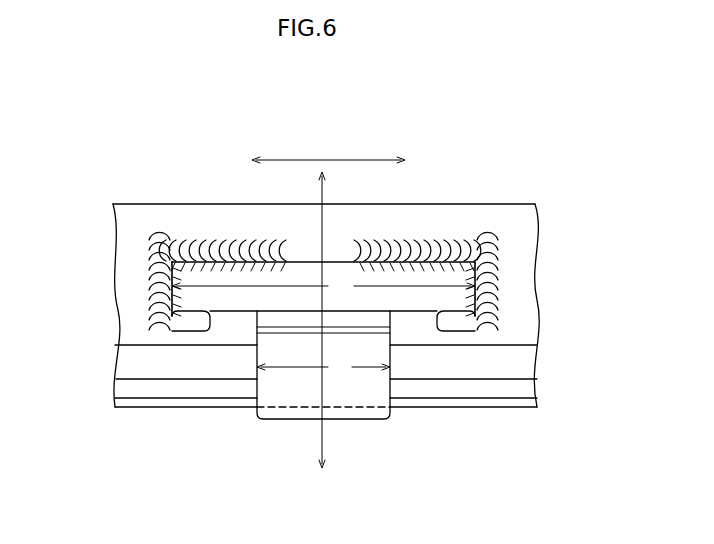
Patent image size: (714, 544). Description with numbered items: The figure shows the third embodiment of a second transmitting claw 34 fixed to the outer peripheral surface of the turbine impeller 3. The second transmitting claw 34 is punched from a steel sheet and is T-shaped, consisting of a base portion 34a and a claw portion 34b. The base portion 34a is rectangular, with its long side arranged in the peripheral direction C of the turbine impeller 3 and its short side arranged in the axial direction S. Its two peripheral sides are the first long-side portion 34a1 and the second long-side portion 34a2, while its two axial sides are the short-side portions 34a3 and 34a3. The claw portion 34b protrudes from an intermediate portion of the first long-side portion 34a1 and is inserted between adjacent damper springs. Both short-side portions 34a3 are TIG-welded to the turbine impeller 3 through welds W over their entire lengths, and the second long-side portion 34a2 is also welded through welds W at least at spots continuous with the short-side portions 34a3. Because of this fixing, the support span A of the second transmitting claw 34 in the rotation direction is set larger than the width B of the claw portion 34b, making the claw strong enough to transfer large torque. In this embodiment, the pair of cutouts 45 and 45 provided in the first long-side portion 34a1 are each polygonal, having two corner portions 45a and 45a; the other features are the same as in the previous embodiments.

The turbine impeller 3 is at (522, 232).
The second transmitting claw 34 is at (326, 420).
The base portion 34a is at (218, 312).
The claw portion 34b is at (300, 398).
The first long-side portion 34a1 is at (188, 332).
The second long-side portion 34a2 is at (303, 260).
The short-side portion 34a3 is at (168, 292).
The cutout 45 is at (233, 312).
The corner portion 45a is at (178, 322).
The weld W is at (183, 242).
The support span A is at (323, 283).
The width of the claw portion B is at (323, 367).
The peripheral direction C is at (345, 160).
The axial direction S is at (325, 442).